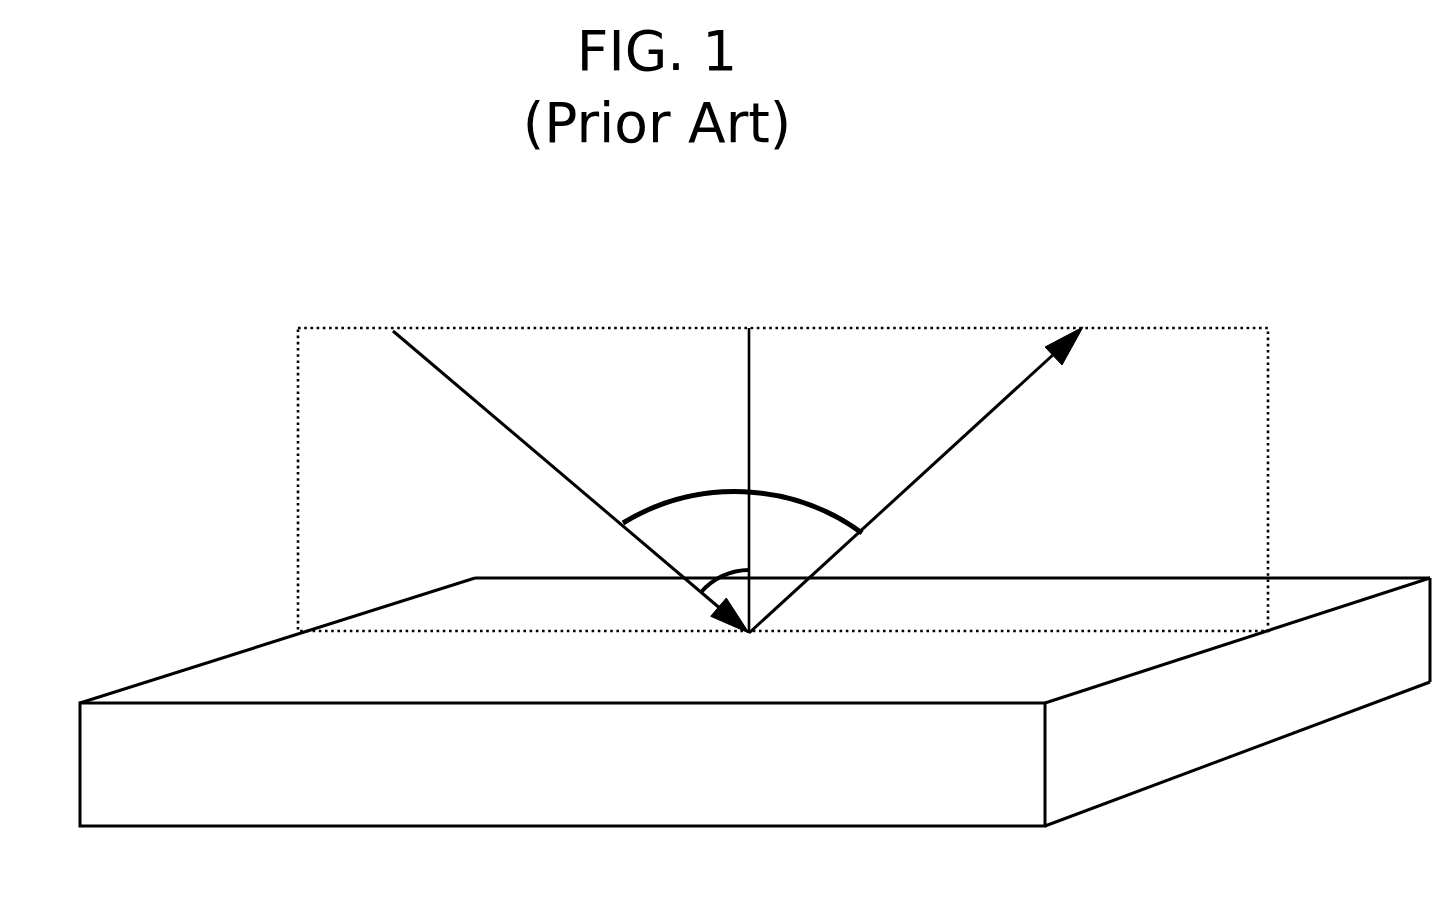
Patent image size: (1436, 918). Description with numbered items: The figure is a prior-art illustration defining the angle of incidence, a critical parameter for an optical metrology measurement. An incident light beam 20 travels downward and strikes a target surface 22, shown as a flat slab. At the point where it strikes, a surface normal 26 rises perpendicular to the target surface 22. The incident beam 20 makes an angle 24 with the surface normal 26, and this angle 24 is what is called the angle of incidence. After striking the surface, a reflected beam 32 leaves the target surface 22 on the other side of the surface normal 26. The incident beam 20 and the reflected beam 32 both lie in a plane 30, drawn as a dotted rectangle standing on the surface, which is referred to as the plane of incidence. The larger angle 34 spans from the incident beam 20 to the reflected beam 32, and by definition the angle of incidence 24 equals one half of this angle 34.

The incident light beam 20 is at (528, 443).
The target surface 22 is at (581, 686).
The angle of incidence 24 is at (728, 568).
The surface normal 26 is at (753, 420).
The plane of incidence 30 is at (518, 523).
The reflected beam 32 is at (877, 517).
The angle between incident beam and reflected beam 34 is at (707, 492).